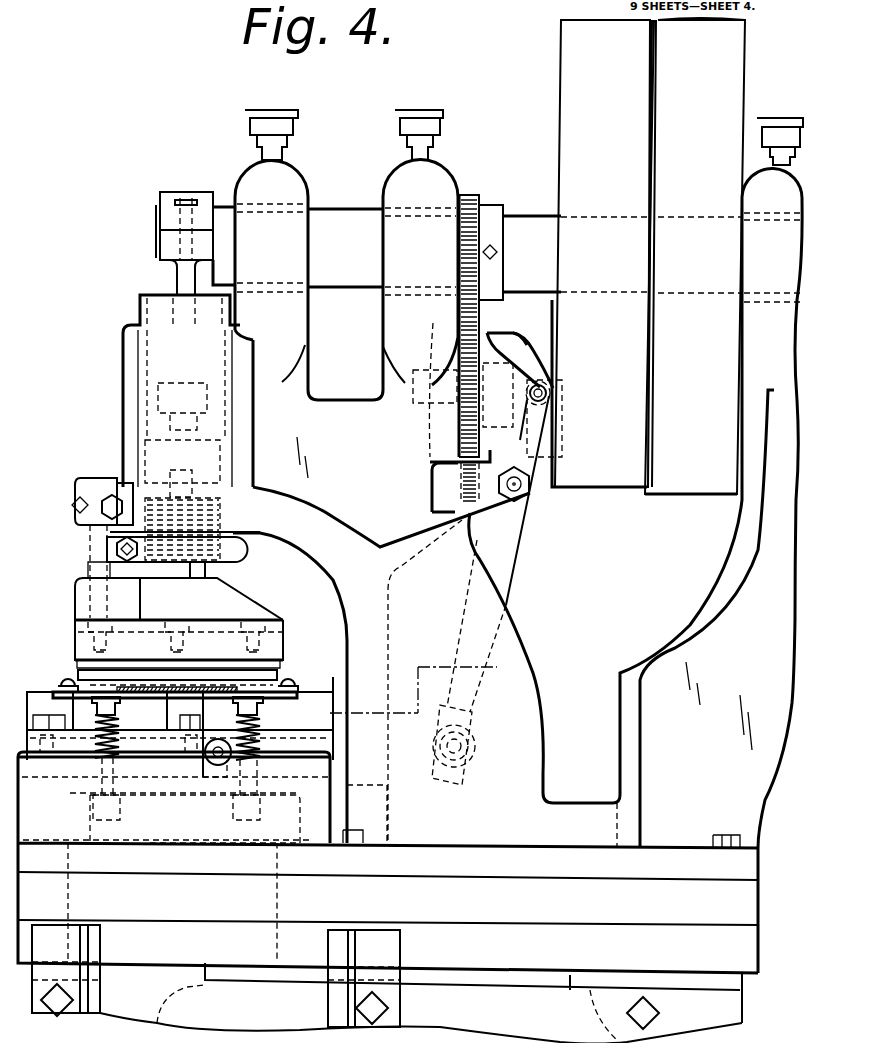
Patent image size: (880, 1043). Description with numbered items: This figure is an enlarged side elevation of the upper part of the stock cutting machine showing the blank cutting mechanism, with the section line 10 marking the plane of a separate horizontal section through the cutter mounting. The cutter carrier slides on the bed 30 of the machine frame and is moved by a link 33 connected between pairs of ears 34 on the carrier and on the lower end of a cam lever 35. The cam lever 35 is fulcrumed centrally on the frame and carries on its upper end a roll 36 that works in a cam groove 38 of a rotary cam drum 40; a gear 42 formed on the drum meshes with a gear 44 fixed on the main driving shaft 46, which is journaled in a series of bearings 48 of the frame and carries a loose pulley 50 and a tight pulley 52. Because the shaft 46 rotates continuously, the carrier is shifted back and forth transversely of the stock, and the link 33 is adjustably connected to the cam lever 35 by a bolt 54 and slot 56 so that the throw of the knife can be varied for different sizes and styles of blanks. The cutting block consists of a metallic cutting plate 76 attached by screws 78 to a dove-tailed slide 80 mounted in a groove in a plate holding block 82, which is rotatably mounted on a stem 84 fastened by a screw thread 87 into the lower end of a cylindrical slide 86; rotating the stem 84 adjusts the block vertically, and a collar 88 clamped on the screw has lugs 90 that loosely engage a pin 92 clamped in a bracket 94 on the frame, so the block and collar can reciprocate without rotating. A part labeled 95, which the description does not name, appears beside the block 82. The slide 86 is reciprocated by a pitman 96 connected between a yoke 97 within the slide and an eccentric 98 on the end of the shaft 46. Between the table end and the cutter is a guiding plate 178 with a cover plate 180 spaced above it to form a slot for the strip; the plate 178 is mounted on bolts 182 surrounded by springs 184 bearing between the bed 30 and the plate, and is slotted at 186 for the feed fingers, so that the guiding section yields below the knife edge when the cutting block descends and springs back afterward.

The section line 10 is at (78, 662).
The bed 30 is at (320, 808).
The link 33 is at (295, 762).
The ears 34 is at (458, 775).
The cam lever 35 is at (513, 553).
The roll 36 is at (552, 388).
The cam groove 38 is at (523, 328).
The rotary cam drum 40 is at (540, 367).
The gear 42 is at (458, 436).
The gear 44 is at (470, 198).
The main driving shaft 46 is at (510, 252).
The bearings 48 is at (390, 185).
The loose pulley 50 is at (605, 253).
The tight pulley 52 is at (695, 256).
The bolt 54 is at (462, 748).
The slot 56 is at (466, 764).
The cutting plate 76 is at (258, 662).
The screws 78 is at (255, 645).
The dove-tailed slide 80 is at (255, 628).
The plate holding block 82 is at (78, 592).
The stem 84 is at (205, 568).
The cylindrical slide 86 is at (210, 468).
The screw thread 87 is at (215, 520).
The collar 88 is at (115, 548).
The lugs 90 is at (95, 556).
The pin 92 is at (107, 472).
The bracket 94 is at (97, 478).
The screw 95 is at (92, 631).
The pitman 96 is at (178, 285).
The yoke 97 is at (160, 430).
The eccentric 98 is at (158, 216).
The guiding plate 178 is at (297, 697).
The cover plate 180 is at (262, 671).
The bolts 182 is at (225, 814).
The springs 184 is at (252, 732).
The slot 186 is at (170, 694).